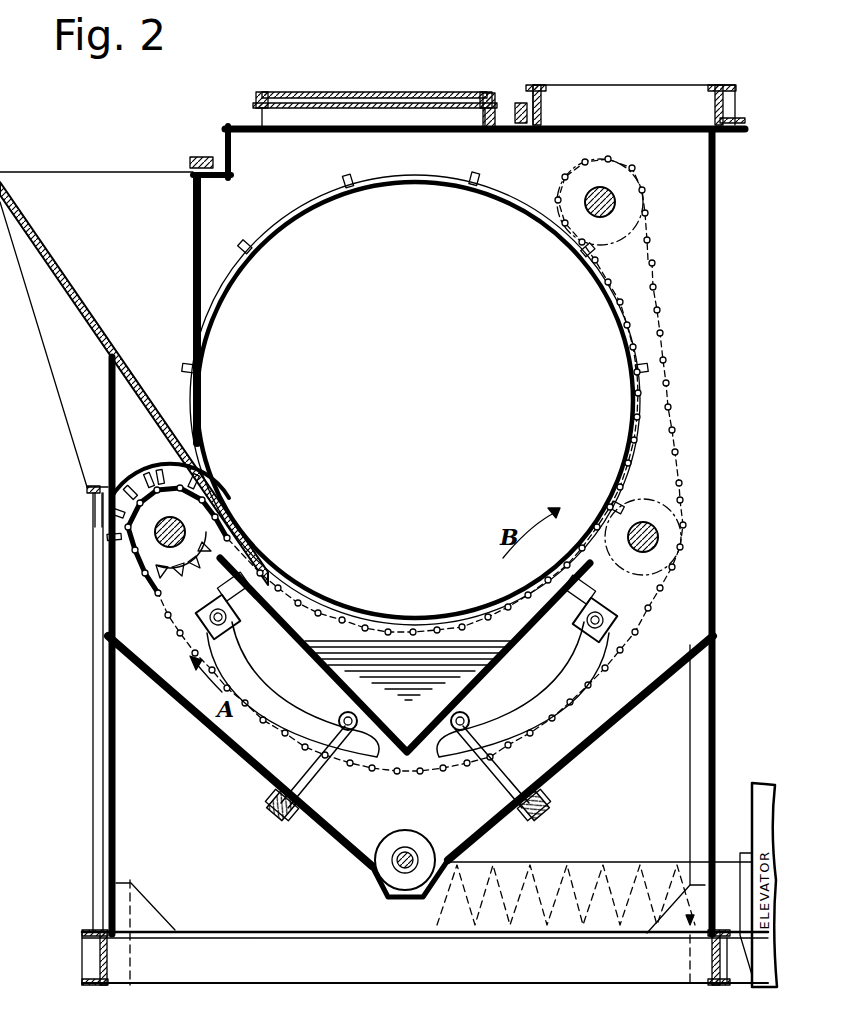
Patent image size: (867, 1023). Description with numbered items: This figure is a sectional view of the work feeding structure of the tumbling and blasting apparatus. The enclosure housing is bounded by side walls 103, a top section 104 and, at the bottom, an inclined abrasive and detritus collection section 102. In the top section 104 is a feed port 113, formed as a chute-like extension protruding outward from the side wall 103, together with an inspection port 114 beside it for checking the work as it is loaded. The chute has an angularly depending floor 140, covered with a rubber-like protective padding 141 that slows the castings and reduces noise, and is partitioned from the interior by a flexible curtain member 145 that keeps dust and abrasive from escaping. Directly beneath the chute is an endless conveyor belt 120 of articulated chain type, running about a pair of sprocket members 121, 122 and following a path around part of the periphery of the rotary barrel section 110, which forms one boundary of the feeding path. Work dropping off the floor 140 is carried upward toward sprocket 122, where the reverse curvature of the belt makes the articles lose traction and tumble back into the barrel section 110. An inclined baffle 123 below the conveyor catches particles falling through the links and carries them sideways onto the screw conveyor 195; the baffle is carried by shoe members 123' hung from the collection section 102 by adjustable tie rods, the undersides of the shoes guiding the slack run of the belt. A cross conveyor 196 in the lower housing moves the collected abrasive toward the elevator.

The abrasive and detritus collection section 102 is at (247, 750).
The side walls 103 is at (107, 410).
The top section 104 is at (236, 127).
The barrel section 110 is at (336, 210).
The feed port 113 is at (65, 171).
The inspection port 114 is at (410, 92).
The endless conveyor belt 120 is at (228, 494).
The sprocket member 121 is at (162, 600).
The sprocket member 122 is at (632, 232).
The inclined baffle 123 is at (390, 657).
The shoe members 123' is at (529, 666).
The floor 140 is at (73, 305).
The protective padding 141 is at (45, 258).
The flexible curtain member 145 is at (203, 228).
The screw conveyor 195 is at (423, 823).
The cross conveyor 196 is at (612, 874).